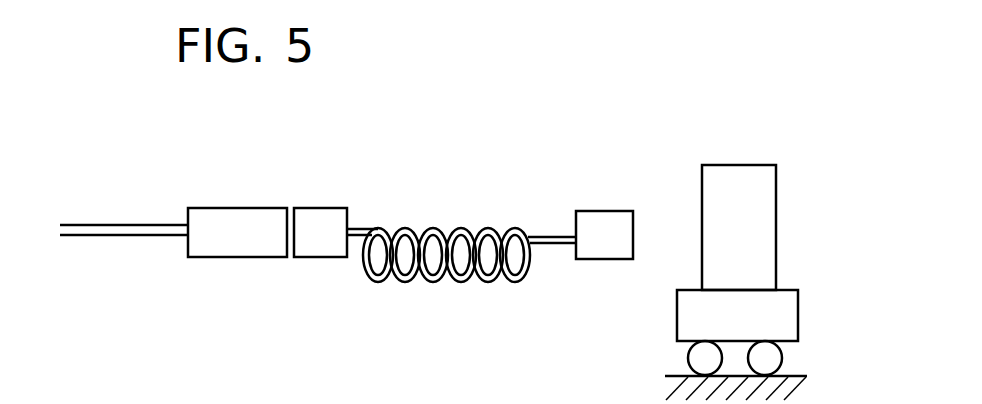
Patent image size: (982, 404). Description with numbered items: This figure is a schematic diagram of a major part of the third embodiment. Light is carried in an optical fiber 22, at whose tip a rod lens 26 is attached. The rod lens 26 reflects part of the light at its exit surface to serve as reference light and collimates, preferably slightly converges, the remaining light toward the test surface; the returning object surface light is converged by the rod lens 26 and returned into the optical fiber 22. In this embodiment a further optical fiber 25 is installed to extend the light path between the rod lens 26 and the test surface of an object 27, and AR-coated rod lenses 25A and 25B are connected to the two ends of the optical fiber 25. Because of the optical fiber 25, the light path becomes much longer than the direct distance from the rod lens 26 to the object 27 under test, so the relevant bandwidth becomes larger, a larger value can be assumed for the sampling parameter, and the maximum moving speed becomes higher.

The optical fiber 22 is at (128, 222).
The rod lens 26 is at (237, 208).
The AR-coated rod lens 25A is at (322, 208).
The optical fiber 25 is at (435, 283).
The AR-coated rod lens 25B is at (608, 215).
The object 27 is at (747, 165).